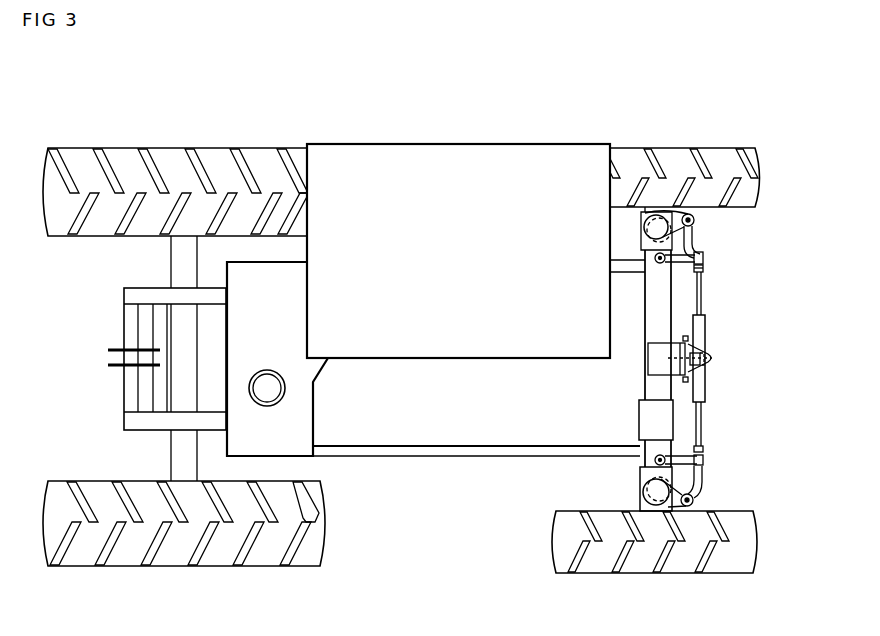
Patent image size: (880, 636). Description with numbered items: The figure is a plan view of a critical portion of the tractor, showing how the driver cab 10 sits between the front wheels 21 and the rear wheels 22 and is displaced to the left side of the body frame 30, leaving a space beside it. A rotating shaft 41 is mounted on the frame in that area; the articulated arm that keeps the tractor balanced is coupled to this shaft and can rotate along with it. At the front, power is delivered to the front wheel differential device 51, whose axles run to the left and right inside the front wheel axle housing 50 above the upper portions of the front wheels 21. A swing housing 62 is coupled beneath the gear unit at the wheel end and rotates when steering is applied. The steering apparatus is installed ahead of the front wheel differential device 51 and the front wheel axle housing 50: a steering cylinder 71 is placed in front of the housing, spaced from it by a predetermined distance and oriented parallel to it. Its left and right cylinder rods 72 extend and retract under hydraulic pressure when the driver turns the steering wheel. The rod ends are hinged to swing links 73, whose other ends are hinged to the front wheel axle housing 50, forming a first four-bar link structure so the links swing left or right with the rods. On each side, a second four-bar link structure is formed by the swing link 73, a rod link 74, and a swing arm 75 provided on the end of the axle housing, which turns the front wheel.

The driver cab 10 is at (462, 155).
The front wheels 21 is at (712, 150).
The rear wheels 22 is at (167, 152).
The body frame 30 is at (453, 452).
The rotating shaft 41 is at (264, 388).
The front wheel axle housing 50 is at (660, 296).
The front wheel differential device 51 is at (668, 412).
The swing housing 62 is at (642, 490).
The steering cylinder 71 is at (704, 333).
The cylinder rods 72 is at (700, 424).
The swing links 73 is at (678, 455).
The rod link 74 is at (700, 478).
The swing arm 75 is at (676, 499).